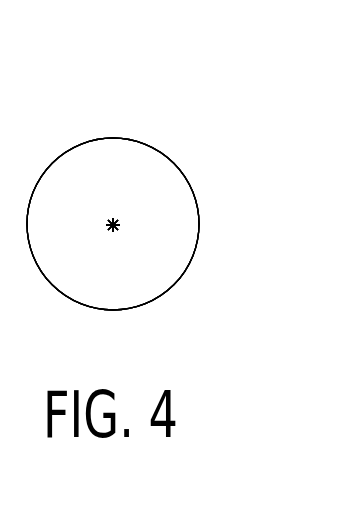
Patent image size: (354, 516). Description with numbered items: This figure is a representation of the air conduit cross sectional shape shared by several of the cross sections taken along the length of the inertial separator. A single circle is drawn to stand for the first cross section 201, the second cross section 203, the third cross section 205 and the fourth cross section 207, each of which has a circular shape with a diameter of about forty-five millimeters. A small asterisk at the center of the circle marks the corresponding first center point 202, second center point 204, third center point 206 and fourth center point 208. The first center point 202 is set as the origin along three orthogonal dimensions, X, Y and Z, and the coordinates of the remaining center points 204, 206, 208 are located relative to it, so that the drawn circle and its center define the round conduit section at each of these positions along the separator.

The first cross section 201 is at (70, 150).
The second cross section 203 is at (113, 177).
The third cross section 205 is at (113, 177).
The fourth cross section 207 is at (127, 177).
The first center point 202 is at (120, 224).
The second center point 204 is at (162, 290).
The third center point 206 is at (185, 290).
The fourth center point 208 is at (205, 290).